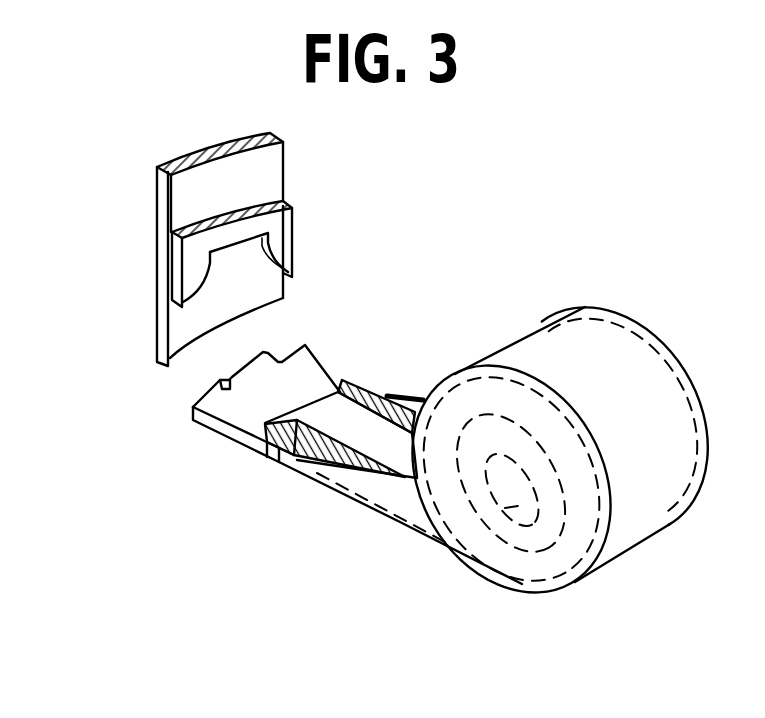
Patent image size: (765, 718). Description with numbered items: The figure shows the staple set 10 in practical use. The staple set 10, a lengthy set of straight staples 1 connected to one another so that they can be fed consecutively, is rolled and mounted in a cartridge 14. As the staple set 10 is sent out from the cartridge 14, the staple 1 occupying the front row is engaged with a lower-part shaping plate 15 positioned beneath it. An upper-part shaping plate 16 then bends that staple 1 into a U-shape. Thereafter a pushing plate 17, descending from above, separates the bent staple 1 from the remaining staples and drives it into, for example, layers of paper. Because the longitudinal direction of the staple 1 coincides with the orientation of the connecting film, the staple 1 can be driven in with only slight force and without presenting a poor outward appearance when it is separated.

The staple 1 is at (263, 448).
The staple set 10 is at (396, 384).
The cartridge 14 is at (523, 585).
The lower-part shaping plate 15 is at (243, 362).
The upper-part shaping plate 16 is at (283, 236).
The pushing plate 17 is at (270, 175).